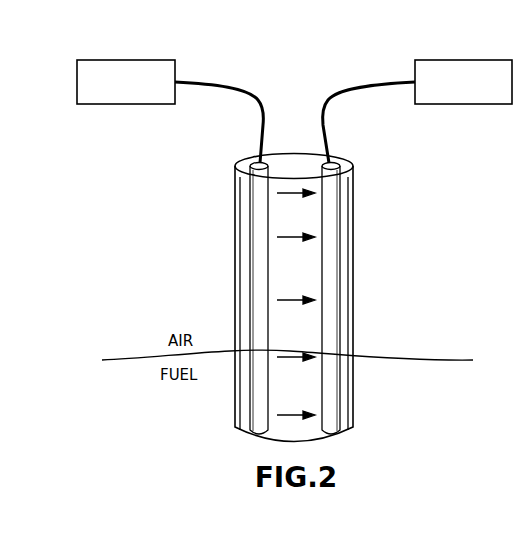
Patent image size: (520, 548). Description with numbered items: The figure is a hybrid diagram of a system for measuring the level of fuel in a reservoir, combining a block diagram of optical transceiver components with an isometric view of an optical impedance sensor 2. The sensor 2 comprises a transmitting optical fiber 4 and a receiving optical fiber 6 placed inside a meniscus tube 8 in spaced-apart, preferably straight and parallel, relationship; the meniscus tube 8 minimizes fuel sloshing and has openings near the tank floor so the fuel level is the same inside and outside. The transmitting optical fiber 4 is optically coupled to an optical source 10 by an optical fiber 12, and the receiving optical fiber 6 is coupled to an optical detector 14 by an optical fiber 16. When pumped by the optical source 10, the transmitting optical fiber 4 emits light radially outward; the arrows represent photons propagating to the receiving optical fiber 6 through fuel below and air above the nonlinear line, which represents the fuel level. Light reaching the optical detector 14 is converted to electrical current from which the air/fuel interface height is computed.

The optical impedance sensor 2 is at (282, 298).
The transmitting optical fiber 4 is at (255, 216).
The receiving optical fiber 6 is at (333, 232).
The meniscus tube 8 is at (236, 308).
The optical source 10 is at (127, 57).
The optical fiber 12 is at (228, 92).
The optical detector 14 is at (465, 57).
The optical fiber 16 is at (359, 90).